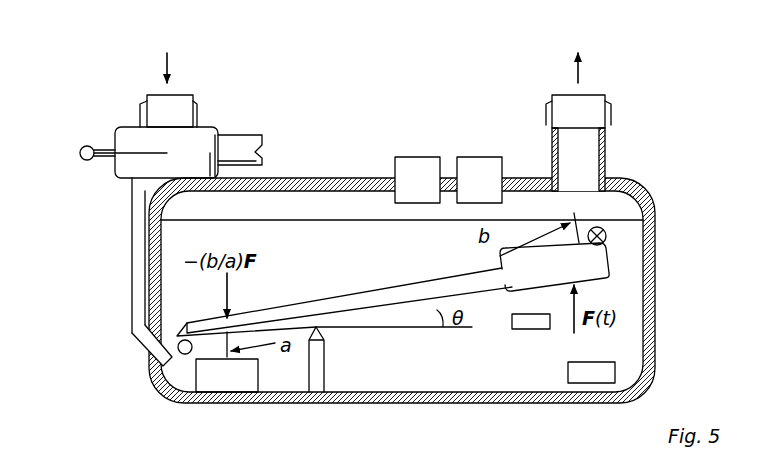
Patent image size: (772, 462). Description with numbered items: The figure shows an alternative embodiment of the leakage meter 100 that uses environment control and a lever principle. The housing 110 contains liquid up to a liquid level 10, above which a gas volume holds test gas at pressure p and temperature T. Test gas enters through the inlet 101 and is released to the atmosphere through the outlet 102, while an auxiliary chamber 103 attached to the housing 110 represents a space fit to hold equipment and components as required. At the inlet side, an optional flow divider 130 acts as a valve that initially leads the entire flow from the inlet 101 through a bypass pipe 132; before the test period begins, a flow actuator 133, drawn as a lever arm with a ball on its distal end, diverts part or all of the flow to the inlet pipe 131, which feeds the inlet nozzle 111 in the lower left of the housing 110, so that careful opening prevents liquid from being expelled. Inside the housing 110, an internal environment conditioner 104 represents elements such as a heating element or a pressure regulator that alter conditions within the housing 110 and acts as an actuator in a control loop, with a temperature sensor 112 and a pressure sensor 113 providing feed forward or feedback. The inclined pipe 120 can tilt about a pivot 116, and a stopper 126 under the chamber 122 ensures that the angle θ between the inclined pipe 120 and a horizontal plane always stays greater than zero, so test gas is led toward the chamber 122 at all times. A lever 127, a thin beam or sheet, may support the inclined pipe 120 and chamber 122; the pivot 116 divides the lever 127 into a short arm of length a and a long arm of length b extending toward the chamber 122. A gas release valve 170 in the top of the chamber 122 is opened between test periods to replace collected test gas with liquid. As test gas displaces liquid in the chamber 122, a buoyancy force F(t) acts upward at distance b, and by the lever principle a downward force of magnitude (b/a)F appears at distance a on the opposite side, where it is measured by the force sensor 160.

The leakage meter 100 is at (371, 70).
The liquid level 10 is at (390, 221).
The housing 110 is at (288, 179).
The inlet 101 is at (160, 100).
The outlet 102 is at (590, 105).
The auxiliary chamber 103 is at (593, 152).
The internal environment conditioner 104 is at (578, 373).
The inlet nozzle 111 is at (148, 345).
The temperature sensor 112 is at (412, 160).
The pressure sensor 113 is at (480, 165).
The pivot 116 is at (318, 330).
The inclined pipe 120 is at (448, 278).
The chamber 122 is at (554, 267).
The stopper 126 is at (522, 330).
The lever 127 is at (337, 298).
The flow divider 130 is at (122, 131).
The inlet pipe 131 is at (132, 258).
The bypass pipe 132 is at (242, 140).
The flow actuator 133 is at (98, 158).
The force sensor 160 is at (227, 375).
The gas release valve 170 is at (595, 226).